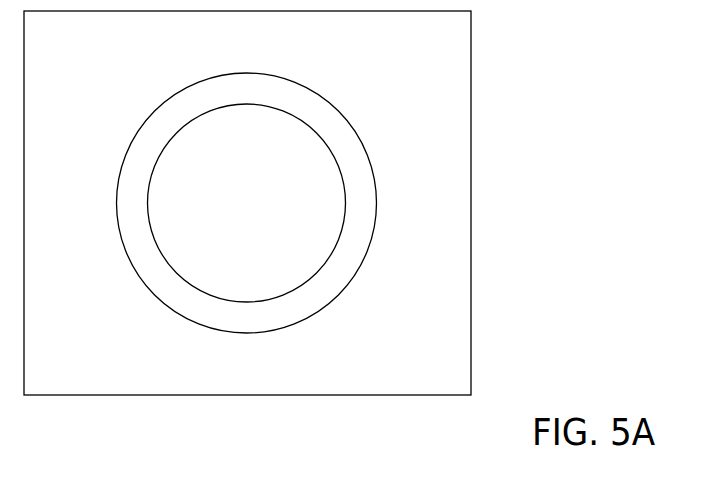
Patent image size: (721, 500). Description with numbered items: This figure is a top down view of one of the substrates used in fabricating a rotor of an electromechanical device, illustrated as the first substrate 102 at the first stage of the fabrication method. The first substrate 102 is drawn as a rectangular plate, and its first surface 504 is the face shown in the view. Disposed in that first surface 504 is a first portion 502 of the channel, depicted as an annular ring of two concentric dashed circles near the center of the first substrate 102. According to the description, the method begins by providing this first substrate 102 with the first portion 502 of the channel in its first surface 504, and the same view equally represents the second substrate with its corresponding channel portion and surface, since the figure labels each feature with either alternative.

The first substrate 102 is at (471, 321).
The first portion of the channel 502 is at (355, 247).
The first surface of the first substrate 504 is at (440, 377).